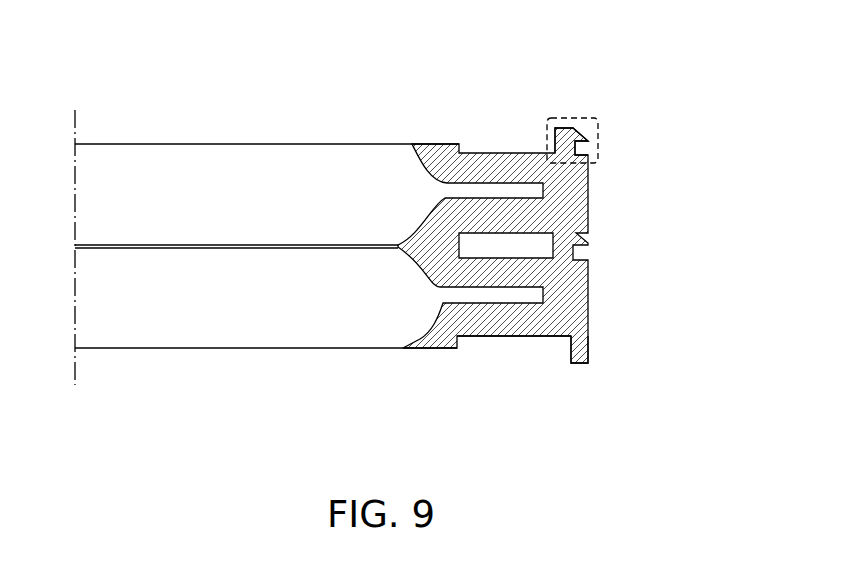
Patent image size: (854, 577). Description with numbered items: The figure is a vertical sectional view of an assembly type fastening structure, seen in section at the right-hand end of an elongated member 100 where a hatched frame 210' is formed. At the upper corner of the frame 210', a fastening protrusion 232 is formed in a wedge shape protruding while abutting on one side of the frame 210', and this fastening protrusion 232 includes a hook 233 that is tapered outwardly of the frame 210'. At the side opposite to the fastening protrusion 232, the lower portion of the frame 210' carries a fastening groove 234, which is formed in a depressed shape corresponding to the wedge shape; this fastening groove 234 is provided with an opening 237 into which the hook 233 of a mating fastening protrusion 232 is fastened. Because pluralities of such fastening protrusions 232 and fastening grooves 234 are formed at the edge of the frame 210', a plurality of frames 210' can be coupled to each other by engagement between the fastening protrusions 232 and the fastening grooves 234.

The tube 100 is at (285, 158).
The frame 210' is at (551, 245).
The fastening protrusion 232 is at (585, 108).
The hook 233 is at (587, 137).
The fastening groove 234 is at (553, 352).
The opening 237 is at (577, 342).